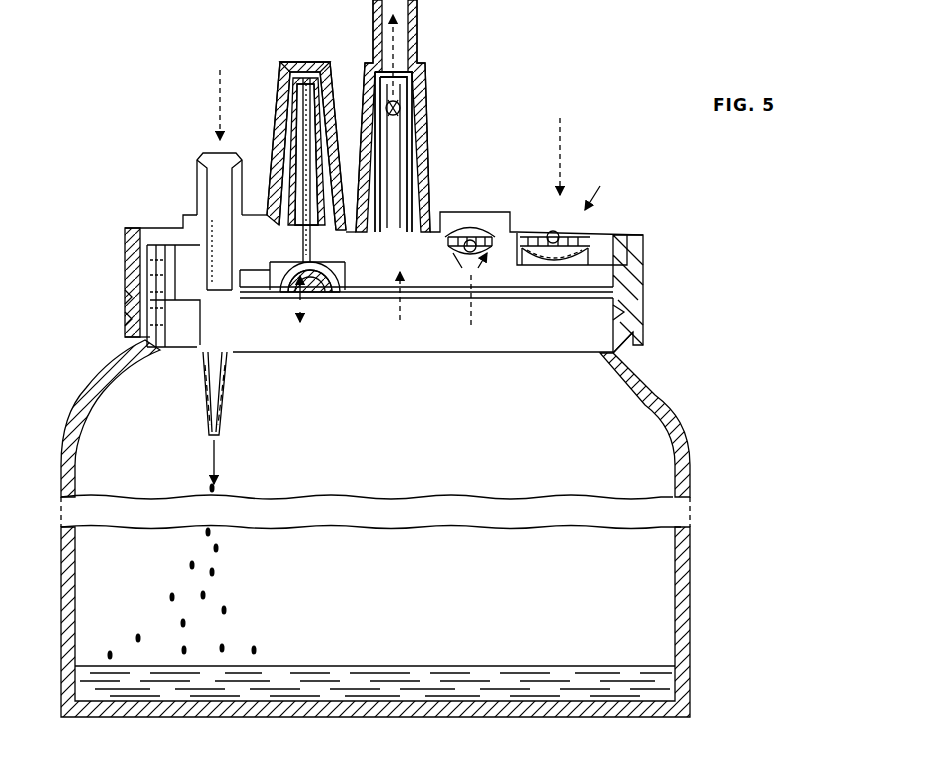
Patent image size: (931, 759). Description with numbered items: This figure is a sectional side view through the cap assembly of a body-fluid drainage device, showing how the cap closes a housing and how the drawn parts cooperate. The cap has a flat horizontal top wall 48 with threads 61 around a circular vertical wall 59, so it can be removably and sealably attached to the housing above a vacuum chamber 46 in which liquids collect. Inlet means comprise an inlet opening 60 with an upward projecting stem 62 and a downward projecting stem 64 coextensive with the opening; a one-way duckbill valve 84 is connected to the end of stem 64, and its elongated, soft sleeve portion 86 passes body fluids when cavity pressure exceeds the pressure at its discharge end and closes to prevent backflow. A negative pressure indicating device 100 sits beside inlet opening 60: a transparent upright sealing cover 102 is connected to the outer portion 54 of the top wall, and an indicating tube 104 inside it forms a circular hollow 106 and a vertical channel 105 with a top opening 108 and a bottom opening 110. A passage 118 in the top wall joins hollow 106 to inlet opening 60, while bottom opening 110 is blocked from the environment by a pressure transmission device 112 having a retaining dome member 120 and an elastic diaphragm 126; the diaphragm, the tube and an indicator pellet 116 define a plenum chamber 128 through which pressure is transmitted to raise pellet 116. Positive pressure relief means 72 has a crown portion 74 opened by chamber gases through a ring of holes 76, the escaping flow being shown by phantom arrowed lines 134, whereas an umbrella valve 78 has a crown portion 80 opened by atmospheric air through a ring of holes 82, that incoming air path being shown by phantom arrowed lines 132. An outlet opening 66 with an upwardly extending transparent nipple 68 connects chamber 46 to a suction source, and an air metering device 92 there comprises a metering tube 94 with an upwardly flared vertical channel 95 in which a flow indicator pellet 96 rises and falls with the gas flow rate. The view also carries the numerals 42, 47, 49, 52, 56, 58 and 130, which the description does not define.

The container 42 is at (411, 528).
The vacuum chamber 46 is at (394, 469).
The cap assembly 47 is at (414, 242).
The top wall 48 is at (605, 233).
The container side wall 49 is at (691, 462).
The cap body 52 is at (151, 226).
The outer portion 54 is at (425, 250).
The cap skirt 56 is at (575, 330).
The container shoulder 58 is at (606, 340).
The circular vertical wall 59 is at (645, 276).
The inlet opening 60 is at (212, 222).
The threads 61 is at (646, 310).
The upward projecting stem 62 is at (198, 165).
The downward projecting stem 64 is at (200, 282).
The outlet opening 66 is at (408, 301).
The nipple 68 is at (429, 116).
The positive pressure relief means 72 is at (490, 200).
The crown portion 74 is at (486, 216).
The ring of holes 76 is at (498, 248).
The umbrella valve 78 is at (599, 186).
The crown portion 80 is at (548, 262).
The ring of holes 82 is at (538, 233).
The duckbill valve 84 is at (173, 360).
The sleeve portion 86 is at (222, 385).
The air metering device 92 is at (440, 146).
The metering tube 94 is at (405, 170).
The vertical channel 95 is at (410, 178).
The flow indicator pellet 96 is at (410, 100).
The negative pressure indicating device 100 is at (283, 141).
The sealing cover 102 is at (288, 62).
The indicating tube 104 is at (292, 90).
The vertical channel 105 is at (322, 78).
The circular hollow 106 is at (296, 112).
The top opening 108 is at (305, 78).
The bottom opening 110 is at (313, 326).
The pressure transmission device 112 is at (331, 352).
The indicator pellet 116 is at (280, 160).
The passage 118 is at (250, 290).
The retaining dome member 120 is at (282, 295).
The elastic diaphragm 126 is at (338, 276).
The plenum chamber 128 is at (345, 290).
The liquid 130 is at (218, 490).
The phantom arrowed lines 132 is at (563, 126).
The phantom arrowed lines 134 is at (472, 326).